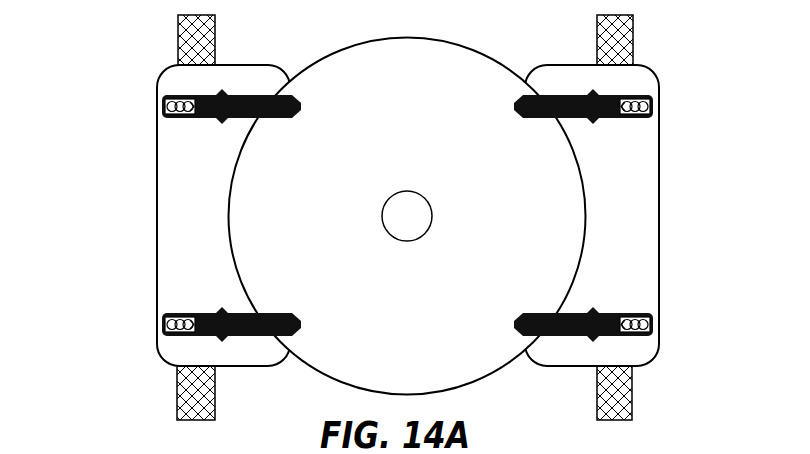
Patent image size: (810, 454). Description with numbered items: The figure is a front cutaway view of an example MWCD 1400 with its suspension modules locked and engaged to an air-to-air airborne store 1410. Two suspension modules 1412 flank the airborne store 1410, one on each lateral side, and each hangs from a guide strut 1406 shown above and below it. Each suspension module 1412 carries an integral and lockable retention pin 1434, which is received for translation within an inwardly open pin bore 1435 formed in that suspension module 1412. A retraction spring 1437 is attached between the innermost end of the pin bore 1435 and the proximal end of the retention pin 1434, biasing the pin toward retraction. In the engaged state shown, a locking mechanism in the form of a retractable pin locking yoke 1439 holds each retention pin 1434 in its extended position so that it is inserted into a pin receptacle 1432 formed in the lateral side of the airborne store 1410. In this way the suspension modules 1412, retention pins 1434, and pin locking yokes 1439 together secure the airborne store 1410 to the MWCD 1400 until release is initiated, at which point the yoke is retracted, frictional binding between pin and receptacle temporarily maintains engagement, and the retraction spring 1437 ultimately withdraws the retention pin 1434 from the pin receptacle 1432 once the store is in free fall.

The MWCD 1400 is at (364, 227).
The guide strut 1406 is at (180, 43).
The airborne store 1410 is at (470, 387).
The suspension module 1412 is at (258, 63).
The pin receptacle 1432 is at (348, 178).
The retention pin 1434 is at (300, 107).
The pin bore 1435 is at (237, 120).
The retraction spring 1437 is at (163, 111).
The pin locking yoke 1439 is at (222, 120).